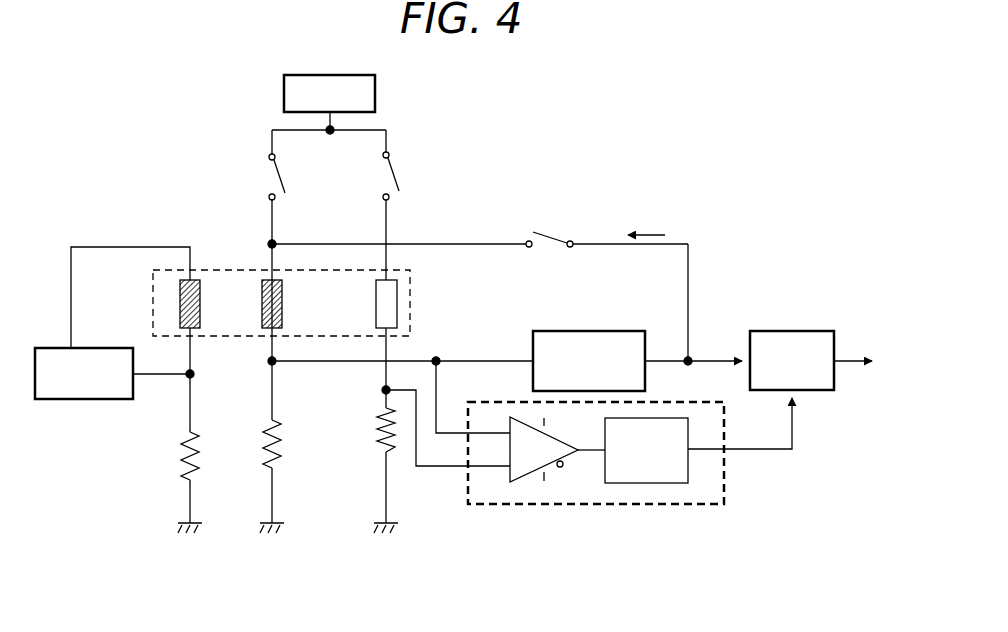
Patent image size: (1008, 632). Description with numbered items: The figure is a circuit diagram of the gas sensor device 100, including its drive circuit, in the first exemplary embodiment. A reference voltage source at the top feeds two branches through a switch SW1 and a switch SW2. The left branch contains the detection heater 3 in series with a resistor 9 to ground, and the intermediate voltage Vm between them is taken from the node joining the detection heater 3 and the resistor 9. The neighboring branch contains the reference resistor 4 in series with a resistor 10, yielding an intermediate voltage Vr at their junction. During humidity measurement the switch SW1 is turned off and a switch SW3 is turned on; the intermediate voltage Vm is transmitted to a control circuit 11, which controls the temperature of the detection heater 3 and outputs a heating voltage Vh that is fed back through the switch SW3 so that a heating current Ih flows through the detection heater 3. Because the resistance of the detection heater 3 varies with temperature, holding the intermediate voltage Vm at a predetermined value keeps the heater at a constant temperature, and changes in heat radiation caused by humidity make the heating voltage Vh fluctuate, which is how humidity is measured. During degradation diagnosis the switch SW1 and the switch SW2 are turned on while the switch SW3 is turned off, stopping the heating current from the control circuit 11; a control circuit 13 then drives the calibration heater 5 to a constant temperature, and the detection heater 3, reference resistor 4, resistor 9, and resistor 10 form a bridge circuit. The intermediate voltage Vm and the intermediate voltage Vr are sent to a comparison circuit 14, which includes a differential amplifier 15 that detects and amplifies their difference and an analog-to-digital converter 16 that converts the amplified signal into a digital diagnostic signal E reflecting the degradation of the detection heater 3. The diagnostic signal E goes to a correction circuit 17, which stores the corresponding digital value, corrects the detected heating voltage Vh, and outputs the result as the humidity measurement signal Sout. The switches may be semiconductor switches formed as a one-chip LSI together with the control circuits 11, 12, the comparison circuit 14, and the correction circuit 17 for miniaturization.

The gas sensor device 100 is at (724, 166).
The detection heater 3 is at (262, 297).
The reference resistor 4 is at (391, 300).
The calibration heater 5 is at (183, 297).
The resistor 9 is at (282, 440).
The resistor 10 is at (378, 432).
The control circuit 11 is at (608, 340).
The control circuit 12 is at (183, 463).
The control circuit 13 is at (48, 355).
The comparison circuit 14 is at (502, 507).
The differential amplifier 15 is at (523, 467).
The analog-to-digital converter 16 is at (648, 485).
The correction circuit 17 is at (802, 340).
The switch SW1 is at (322, 178).
The switch SW2 is at (434, 175).
The switch SW3 is at (549, 222).
The heating current Ih is at (650, 232).
The heating voltage Vh is at (712, 343).
The intermediate voltage Vm is at (266, 366).
The intermediate voltage Vr is at (448, 443).
The diagnostic signal E is at (751, 423).
The humidity measurement signal Sout is at (862, 347).